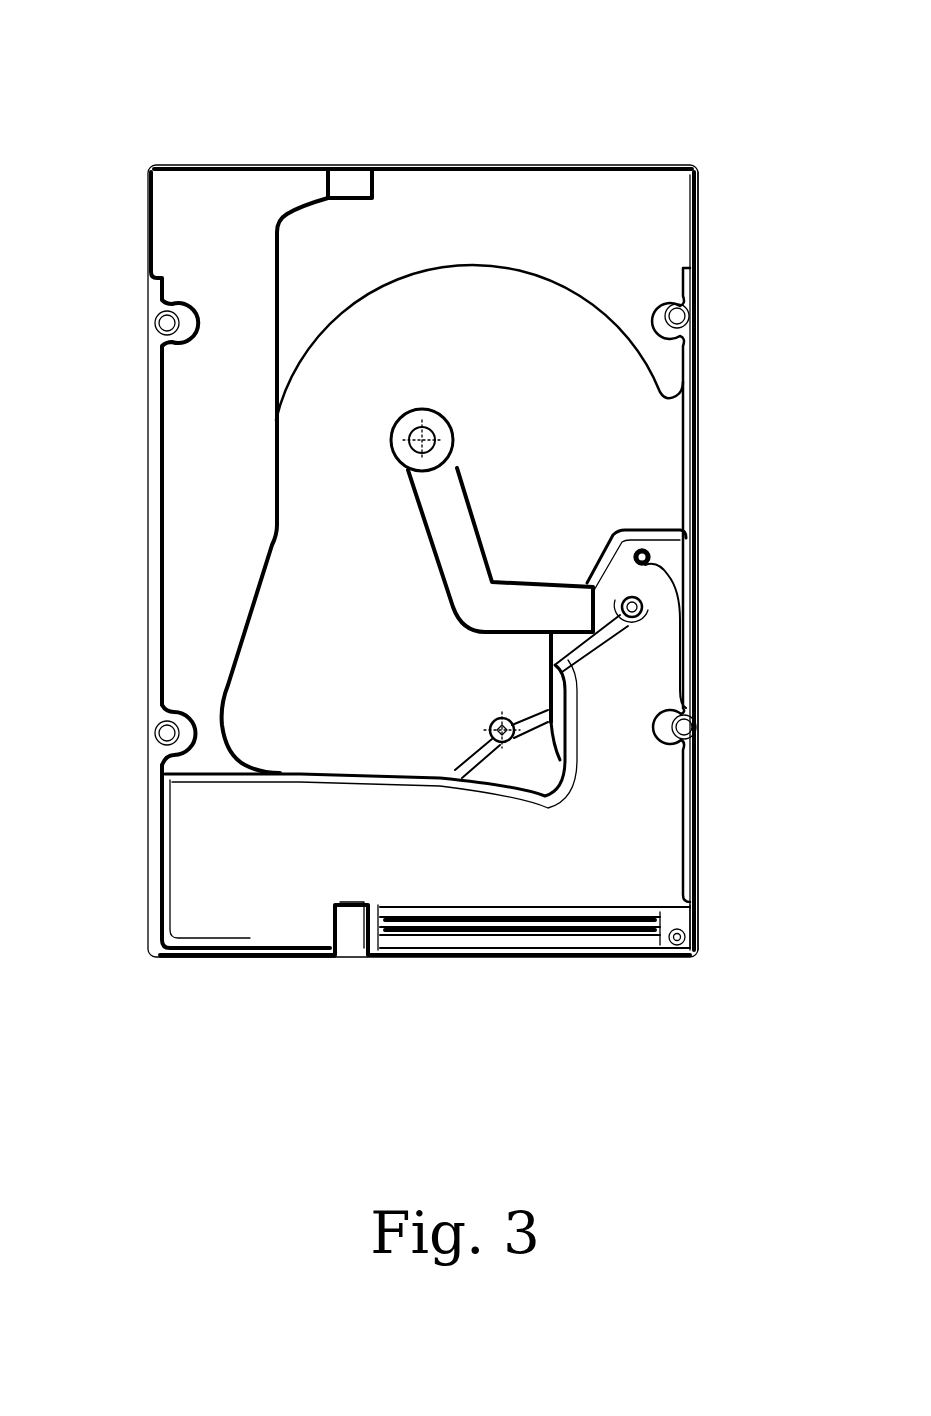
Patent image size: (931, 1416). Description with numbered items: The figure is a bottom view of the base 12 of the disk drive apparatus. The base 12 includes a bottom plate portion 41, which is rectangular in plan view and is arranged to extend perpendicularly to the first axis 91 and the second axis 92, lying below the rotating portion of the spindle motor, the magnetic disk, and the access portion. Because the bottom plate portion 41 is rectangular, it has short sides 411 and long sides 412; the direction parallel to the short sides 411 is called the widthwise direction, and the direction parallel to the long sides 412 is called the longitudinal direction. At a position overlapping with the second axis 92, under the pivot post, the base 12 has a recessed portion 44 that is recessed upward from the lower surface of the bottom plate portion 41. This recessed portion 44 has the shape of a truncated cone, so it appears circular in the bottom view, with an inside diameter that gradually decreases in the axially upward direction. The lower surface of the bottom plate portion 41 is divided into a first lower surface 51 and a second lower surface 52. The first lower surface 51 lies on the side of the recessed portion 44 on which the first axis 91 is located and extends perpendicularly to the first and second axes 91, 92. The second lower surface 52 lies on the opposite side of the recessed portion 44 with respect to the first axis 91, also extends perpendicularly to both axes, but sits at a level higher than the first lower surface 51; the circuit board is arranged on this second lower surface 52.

The base 12 is at (279, 118).
The bottom plate portion 41 is at (425, 335).
The long sides 412 is at (700, 304).
The short sides 411 is at (268, 958).
The first lower surface 51 is at (396, 655).
The second lower surface 52 is at (572, 830).
The first axis 91 is at (432, 426).
The second axis 92 is at (518, 715).
The recessed portion 44 is at (494, 718).